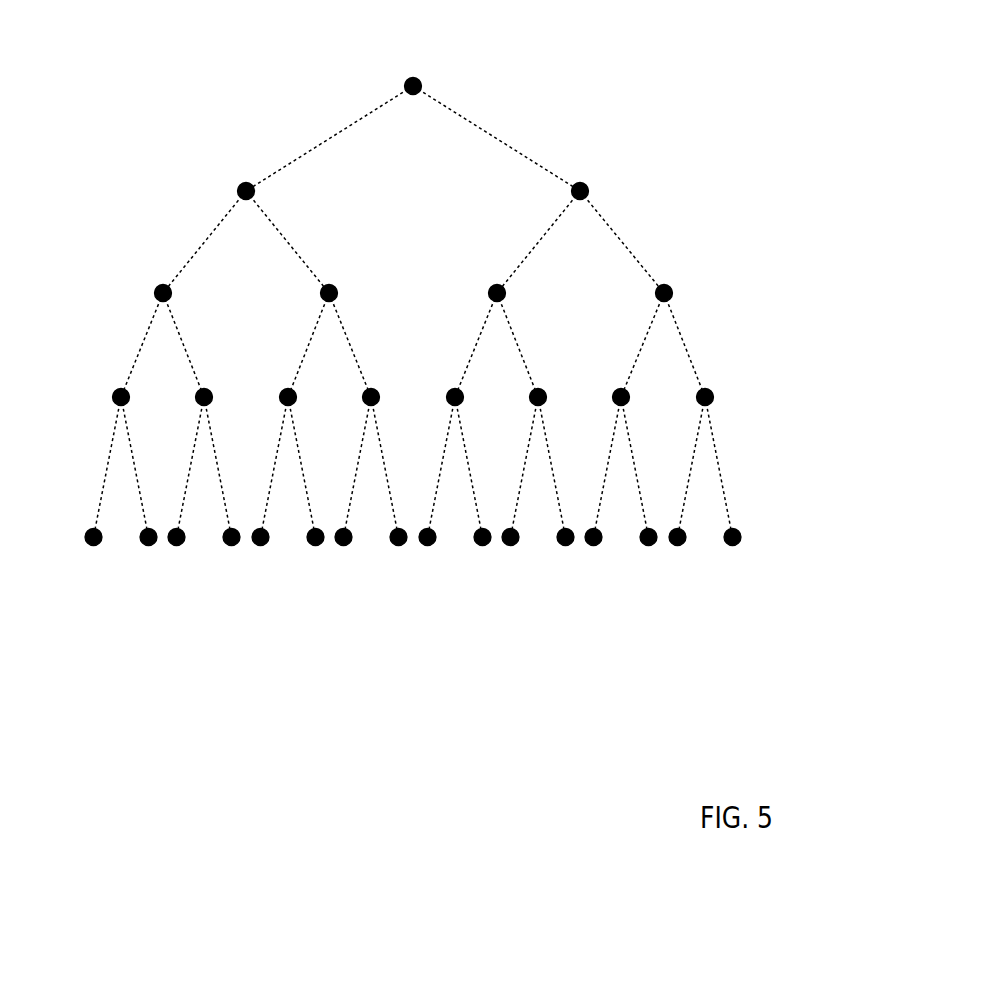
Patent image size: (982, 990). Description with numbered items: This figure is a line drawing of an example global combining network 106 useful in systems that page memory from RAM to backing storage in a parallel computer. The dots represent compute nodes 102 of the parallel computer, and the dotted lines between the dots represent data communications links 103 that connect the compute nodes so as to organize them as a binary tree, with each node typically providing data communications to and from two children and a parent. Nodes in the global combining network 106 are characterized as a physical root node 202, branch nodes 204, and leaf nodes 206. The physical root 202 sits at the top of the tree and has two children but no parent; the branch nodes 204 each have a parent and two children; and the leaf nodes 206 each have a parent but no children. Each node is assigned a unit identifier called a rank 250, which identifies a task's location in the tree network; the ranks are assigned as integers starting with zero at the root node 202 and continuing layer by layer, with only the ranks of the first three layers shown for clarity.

The compute nodes 102 is at (483, 545).
The data communications links 103 is at (338, 132).
The global combining network 106 is at (213, 632).
The physical root node 202 is at (432, 77).
The branch nodes 204 is at (748, 142).
The leaf nodes 206 is at (748, 541).
The rank 250 is at (544, 201).